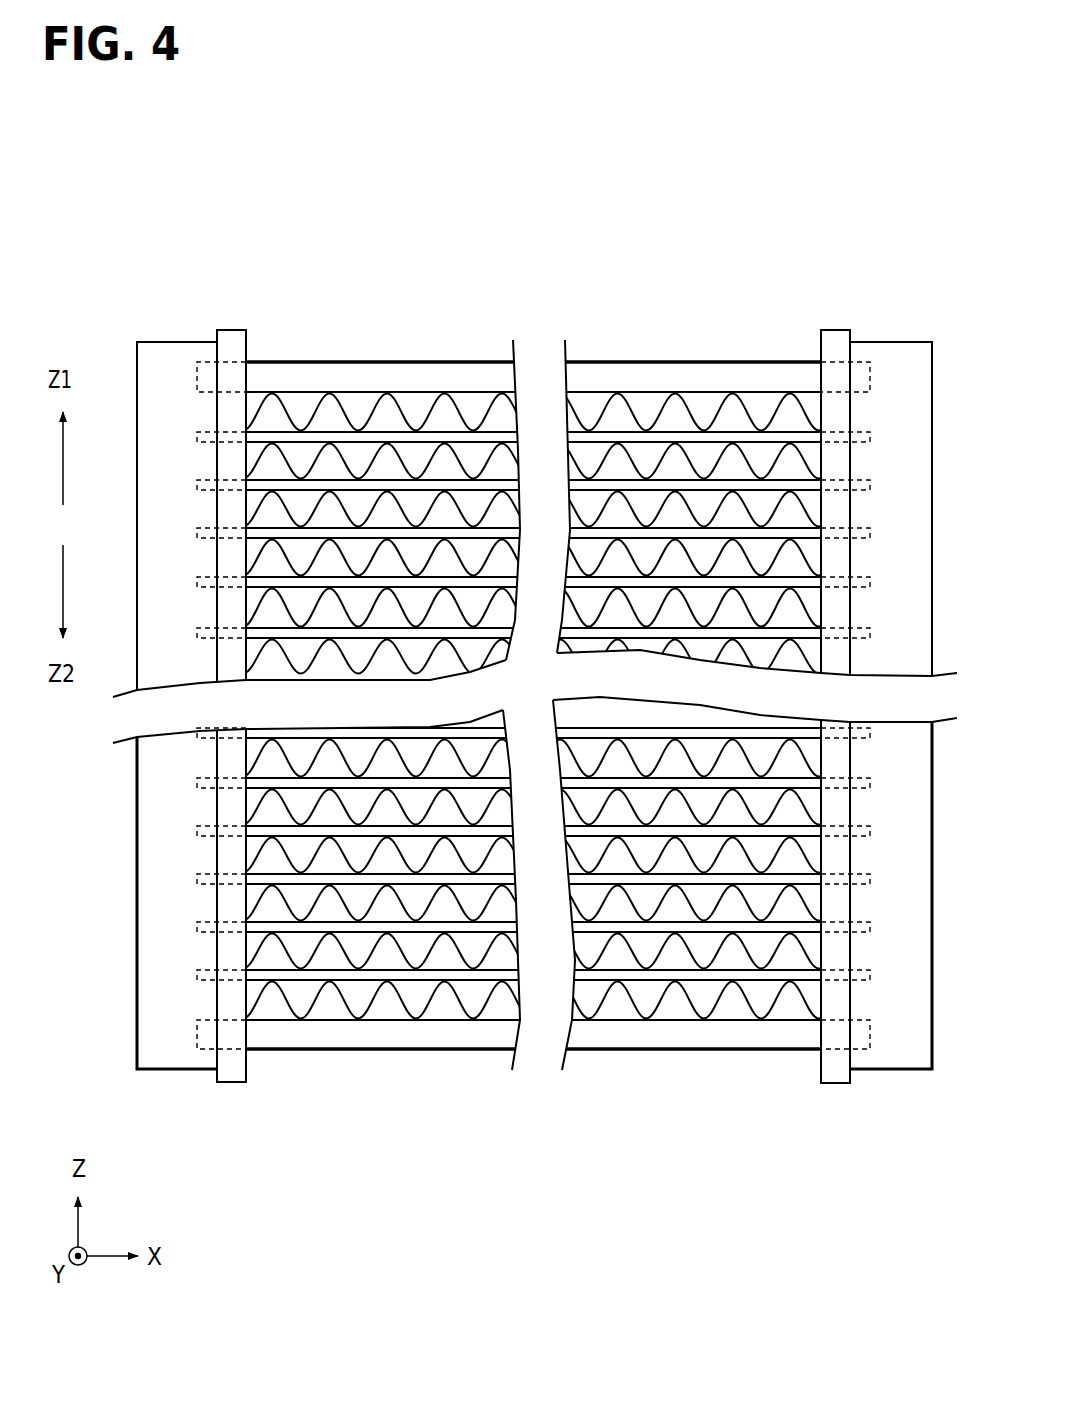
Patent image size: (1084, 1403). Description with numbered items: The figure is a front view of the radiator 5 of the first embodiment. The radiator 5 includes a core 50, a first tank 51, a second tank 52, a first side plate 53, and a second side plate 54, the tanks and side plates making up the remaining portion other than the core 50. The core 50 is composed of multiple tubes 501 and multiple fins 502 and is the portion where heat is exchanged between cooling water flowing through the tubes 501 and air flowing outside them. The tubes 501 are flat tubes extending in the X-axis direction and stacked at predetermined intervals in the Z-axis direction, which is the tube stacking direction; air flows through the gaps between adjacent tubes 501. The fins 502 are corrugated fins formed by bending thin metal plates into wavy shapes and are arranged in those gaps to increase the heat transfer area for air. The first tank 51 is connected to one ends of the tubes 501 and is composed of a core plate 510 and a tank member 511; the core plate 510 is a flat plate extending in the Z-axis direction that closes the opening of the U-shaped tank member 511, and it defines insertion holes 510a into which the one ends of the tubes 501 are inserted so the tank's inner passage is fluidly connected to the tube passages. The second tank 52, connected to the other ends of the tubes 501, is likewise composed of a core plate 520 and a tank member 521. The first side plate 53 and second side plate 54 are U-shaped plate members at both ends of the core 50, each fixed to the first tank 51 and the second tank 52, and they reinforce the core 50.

The radiator 5 is at (825, 258).
The core 50 is at (456, 408).
The tube 501 is at (393, 425).
The fin 502 is at (463, 462).
The first tank 51 is at (170, 340).
The core plate 510 is at (233, 330).
The insertion hole 510a is at (237, 437).
The tank member 511 is at (190, 342).
The second tank 52 is at (889, 338).
The core plate 520 is at (832, 330).
The tank member 521 is at (870, 342).
The first side plate 53 is at (369, 360).
The second side plate 54 is at (372, 1053).